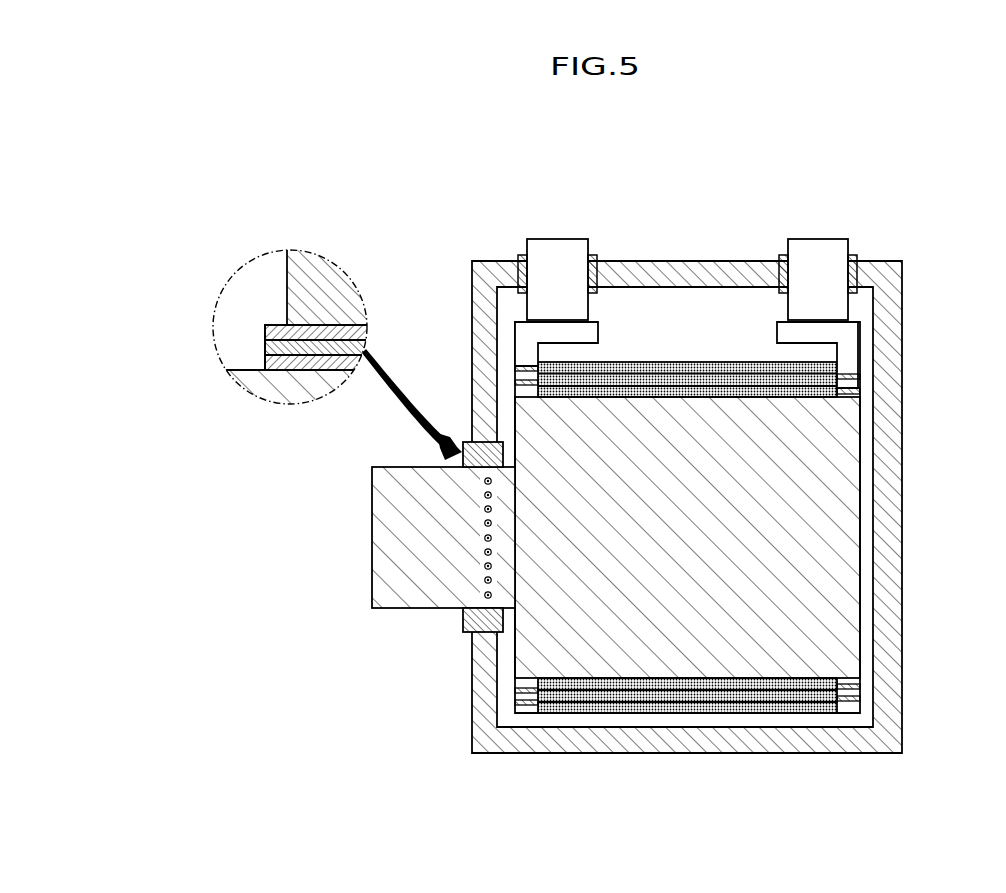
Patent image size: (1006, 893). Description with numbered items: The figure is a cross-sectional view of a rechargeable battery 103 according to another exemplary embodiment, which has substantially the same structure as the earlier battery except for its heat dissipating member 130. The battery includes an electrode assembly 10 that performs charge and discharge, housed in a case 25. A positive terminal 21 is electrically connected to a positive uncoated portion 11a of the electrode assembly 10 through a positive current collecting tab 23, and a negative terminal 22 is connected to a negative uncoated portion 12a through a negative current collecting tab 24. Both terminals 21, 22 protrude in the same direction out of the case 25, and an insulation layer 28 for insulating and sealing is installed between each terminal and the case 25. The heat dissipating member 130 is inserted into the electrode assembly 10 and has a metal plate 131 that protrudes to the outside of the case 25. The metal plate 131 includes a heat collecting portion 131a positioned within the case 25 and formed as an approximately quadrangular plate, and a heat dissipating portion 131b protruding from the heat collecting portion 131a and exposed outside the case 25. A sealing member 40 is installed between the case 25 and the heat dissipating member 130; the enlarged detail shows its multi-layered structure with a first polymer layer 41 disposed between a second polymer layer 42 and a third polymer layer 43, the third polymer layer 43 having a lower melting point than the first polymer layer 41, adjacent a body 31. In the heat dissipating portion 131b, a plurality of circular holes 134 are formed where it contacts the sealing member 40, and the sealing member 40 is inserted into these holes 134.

The rechargeable battery 103 is at (673, 128).
The case 25 is at (316, 262).
The positive terminal 21 is at (560, 252).
The negative terminal 22 is at (817, 252).
The insulation layer 28 is at (593, 255).
The electrode assembly 10 is at (716, 350).
The positive current collecting tab 23 is at (560, 330).
The negative current collecting tab 24 is at (835, 323).
The positive uncoated portion 11a is at (529, 365).
The negative uncoated portion 12a is at (847, 378).
The sealing member 40 is at (155, 282).
The third polymer layer 43 is at (268, 333).
The first polymer layer 41 is at (268, 347).
The second polymer layer 42 is at (268, 362).
The heat sink body 31 is at (268, 395).
The holes 134 is at (482, 543).
The metal plate 131 is at (393, 565).
The heat dissipating portion 131b is at (398, 590).
The heat collecting portion 131a is at (537, 648).
The heat dissipating member 130 is at (662, 680).